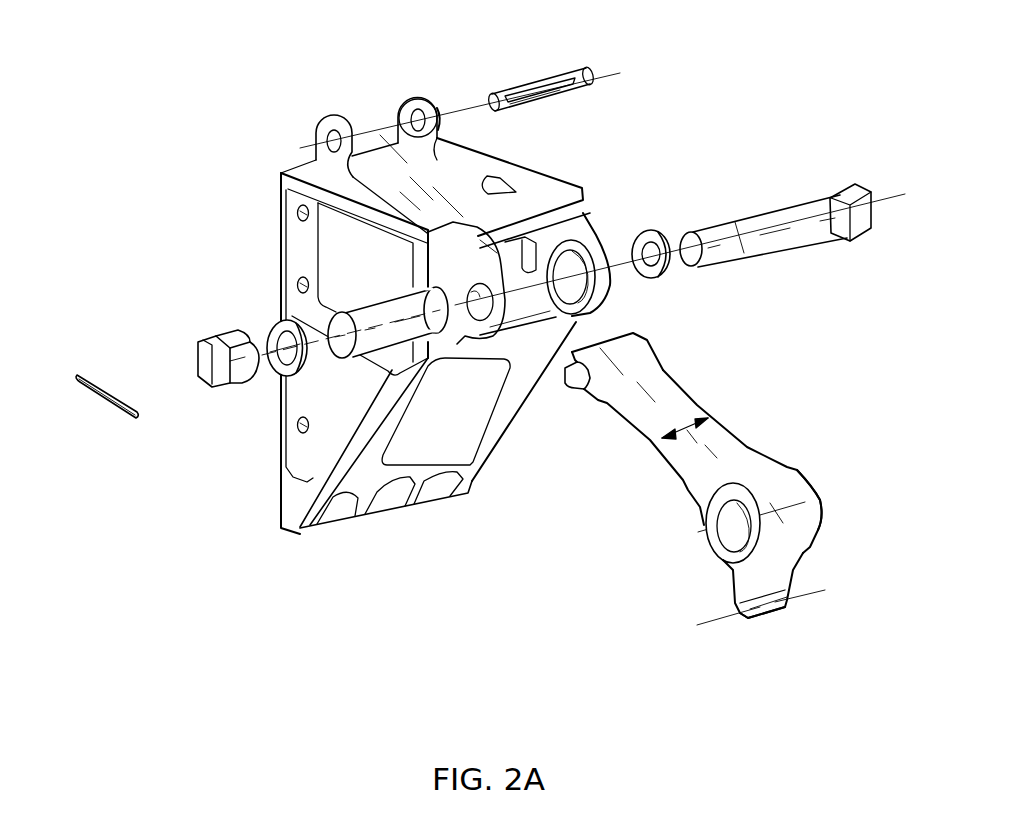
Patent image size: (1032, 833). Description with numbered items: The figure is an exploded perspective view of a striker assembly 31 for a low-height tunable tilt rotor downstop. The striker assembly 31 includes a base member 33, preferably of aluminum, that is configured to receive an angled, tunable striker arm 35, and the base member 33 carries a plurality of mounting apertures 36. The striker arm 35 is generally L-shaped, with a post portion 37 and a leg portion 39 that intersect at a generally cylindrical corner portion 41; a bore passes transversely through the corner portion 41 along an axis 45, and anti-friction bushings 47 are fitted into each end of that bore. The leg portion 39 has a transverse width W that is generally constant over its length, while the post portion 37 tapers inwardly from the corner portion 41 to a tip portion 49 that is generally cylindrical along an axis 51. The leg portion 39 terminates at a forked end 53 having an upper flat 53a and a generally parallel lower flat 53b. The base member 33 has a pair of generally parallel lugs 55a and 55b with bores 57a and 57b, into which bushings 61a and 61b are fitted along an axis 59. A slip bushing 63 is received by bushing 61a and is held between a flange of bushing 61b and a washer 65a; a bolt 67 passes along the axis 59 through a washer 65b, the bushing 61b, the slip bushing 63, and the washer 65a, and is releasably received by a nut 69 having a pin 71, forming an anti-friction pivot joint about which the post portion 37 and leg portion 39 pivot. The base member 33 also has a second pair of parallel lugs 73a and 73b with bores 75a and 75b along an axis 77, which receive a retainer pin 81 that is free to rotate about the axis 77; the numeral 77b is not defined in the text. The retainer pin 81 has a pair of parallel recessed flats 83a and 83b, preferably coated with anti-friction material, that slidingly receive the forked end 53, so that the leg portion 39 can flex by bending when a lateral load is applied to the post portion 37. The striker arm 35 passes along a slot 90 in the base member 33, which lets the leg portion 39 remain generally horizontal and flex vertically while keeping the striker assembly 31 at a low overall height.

The striker assembly 31 is at (163, 198).
The base member 33 is at (268, 458).
The striker arm 35 is at (777, 413).
The mounting apertures 36 is at (296, 217).
The post portion 37 is at (803, 567).
The leg portion 39 is at (702, 408).
The corner portion 41 is at (813, 473).
The axis 45 is at (812, 505).
The bushings 47 is at (710, 533).
The tip portion 49 is at (763, 621).
The axis 51 is at (808, 600).
The forked end 53 is at (653, 344).
The upper flat 53a is at (633, 326).
The lower flat 53b is at (567, 385).
The lug 55a is at (470, 486).
The lug 55b is at (608, 247).
The bore 57a is at (478, 290).
The bore 57b is at (604, 286).
The axis 59 is at (880, 197).
The bushing 61a is at (462, 338).
The bushing 61b is at (585, 236).
The slip bushing 63 is at (370, 303).
The washer 65a is at (283, 378).
The washer 65b is at (658, 233).
The bolt 67 is at (772, 210).
The nut 69 is at (227, 350).
The pin 71 is at (105, 388).
The lug 73a is at (322, 122).
The lug 73b is at (417, 96).
The bore 75a is at (333, 130).
The bore 75b is at (434, 118).
The axis 77 is at (303, 145).
The lug washer 77b is at (400, 104).
The retainer pin 81 is at (570, 71).
The recessed flat 83a is at (520, 83).
The recessed flat 83b is at (525, 106).
The slot 90 is at (488, 186).
The transverse width W is at (678, 430).